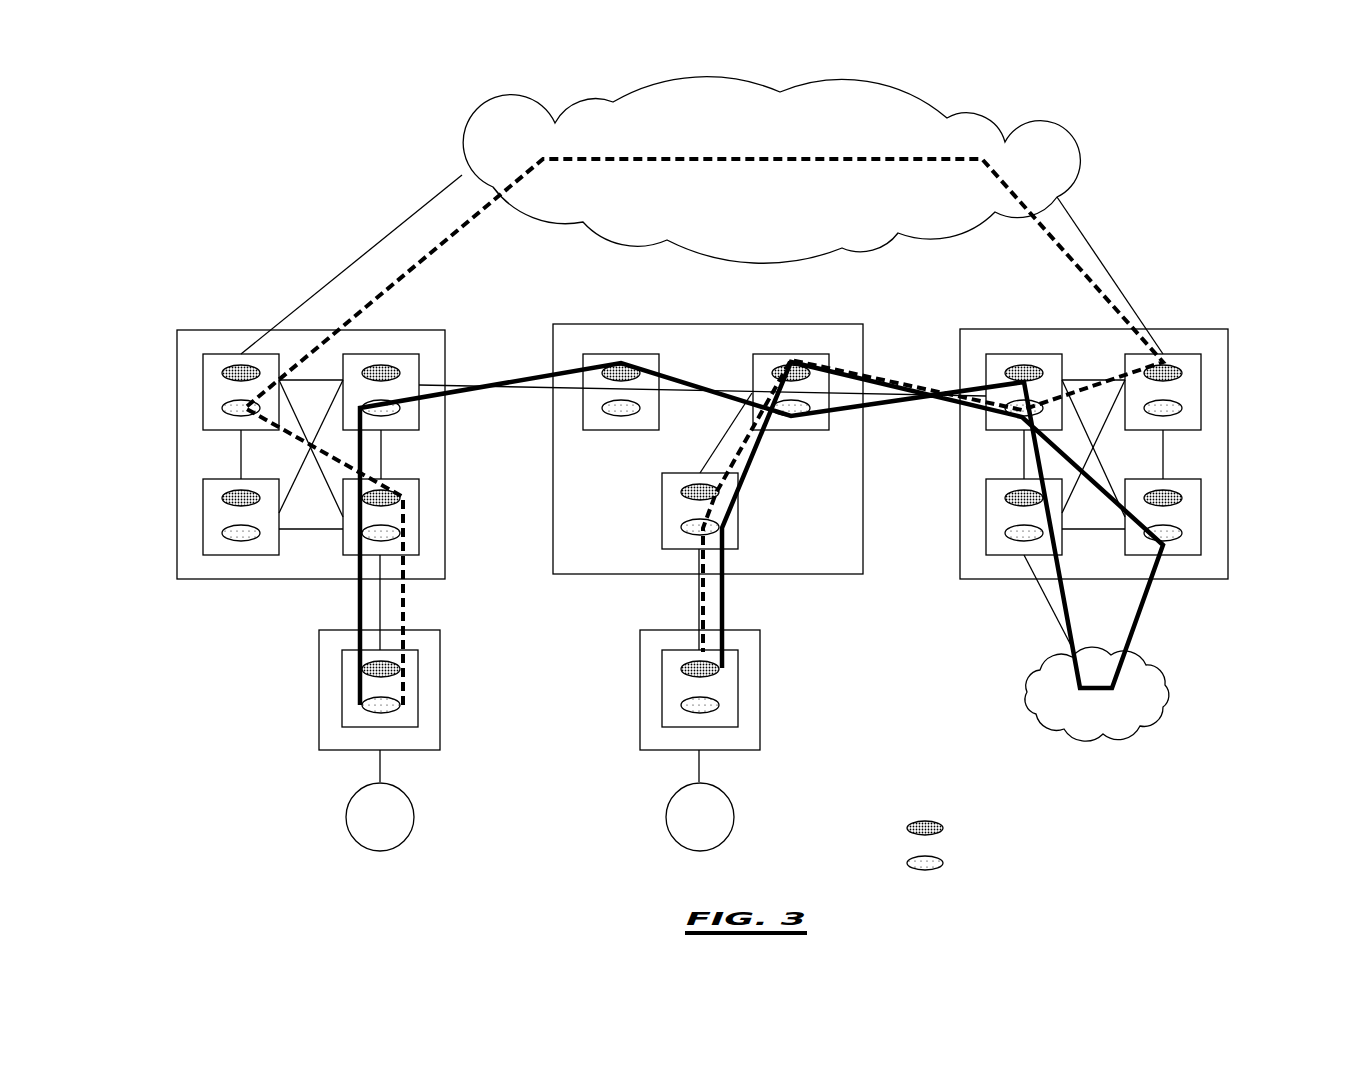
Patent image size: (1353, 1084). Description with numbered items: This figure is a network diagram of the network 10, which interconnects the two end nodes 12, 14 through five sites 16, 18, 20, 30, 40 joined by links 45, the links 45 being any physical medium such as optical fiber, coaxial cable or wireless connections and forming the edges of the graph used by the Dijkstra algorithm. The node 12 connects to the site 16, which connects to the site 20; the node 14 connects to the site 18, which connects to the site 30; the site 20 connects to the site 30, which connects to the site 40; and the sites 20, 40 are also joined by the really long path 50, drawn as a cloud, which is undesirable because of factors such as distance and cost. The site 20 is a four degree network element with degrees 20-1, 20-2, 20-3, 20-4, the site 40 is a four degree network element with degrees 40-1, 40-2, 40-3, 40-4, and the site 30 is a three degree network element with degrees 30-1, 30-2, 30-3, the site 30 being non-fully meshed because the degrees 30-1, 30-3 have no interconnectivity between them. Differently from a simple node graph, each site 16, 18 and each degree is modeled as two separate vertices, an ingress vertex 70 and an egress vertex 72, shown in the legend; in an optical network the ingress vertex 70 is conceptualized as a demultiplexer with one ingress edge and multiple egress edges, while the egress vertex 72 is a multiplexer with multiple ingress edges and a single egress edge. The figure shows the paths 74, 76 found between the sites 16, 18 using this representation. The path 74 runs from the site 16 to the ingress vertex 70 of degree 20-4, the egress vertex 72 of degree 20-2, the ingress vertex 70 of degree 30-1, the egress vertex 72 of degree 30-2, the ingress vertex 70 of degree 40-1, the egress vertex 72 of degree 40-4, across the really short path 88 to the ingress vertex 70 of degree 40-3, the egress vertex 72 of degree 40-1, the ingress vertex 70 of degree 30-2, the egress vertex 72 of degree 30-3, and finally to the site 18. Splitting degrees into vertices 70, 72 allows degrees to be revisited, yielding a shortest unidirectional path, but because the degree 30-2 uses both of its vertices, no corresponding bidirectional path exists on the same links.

The network 10 is at (269, 150).
The node 12 is at (347, 817).
The node 14 is at (737, 817).
The site 16 is at (342, 688).
The site 18 is at (738, 687).
The site 20 is at (312, 433).
The degree 20-1 is at (202, 385).
The degree 20-2 is at (393, 355).
The degree 20-3 is at (202, 518).
The degree 20-4 is at (418, 518).
The site 30 is at (685, 428).
The degree 30-1 is at (583, 362).
The degree 30-2 is at (783, 360).
The degree 30-3 is at (662, 513).
The site 40 is at (1094, 433).
The degree 40-1 is at (985, 380).
The degree 40-2 is at (1203, 390).
The degree 40-3 is at (985, 518).
The degree 40-4 is at (1203, 518).
The links 45 is at (413, 213).
The really long path 50 is at (1030, 145).
The ingress vertex 70 is at (908, 828).
The egress vertex 72 is at (908, 863).
The path 74 is at (673, 380).
The path 76 is at (822, 158).
The really short path 88 is at (1173, 685).